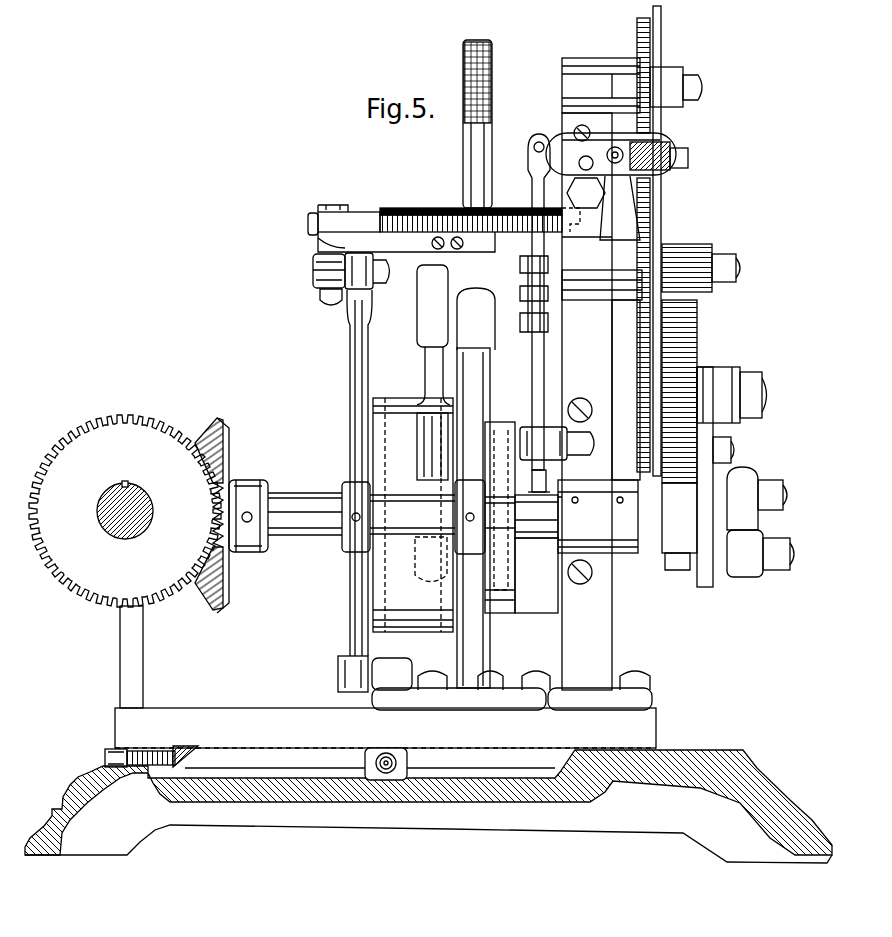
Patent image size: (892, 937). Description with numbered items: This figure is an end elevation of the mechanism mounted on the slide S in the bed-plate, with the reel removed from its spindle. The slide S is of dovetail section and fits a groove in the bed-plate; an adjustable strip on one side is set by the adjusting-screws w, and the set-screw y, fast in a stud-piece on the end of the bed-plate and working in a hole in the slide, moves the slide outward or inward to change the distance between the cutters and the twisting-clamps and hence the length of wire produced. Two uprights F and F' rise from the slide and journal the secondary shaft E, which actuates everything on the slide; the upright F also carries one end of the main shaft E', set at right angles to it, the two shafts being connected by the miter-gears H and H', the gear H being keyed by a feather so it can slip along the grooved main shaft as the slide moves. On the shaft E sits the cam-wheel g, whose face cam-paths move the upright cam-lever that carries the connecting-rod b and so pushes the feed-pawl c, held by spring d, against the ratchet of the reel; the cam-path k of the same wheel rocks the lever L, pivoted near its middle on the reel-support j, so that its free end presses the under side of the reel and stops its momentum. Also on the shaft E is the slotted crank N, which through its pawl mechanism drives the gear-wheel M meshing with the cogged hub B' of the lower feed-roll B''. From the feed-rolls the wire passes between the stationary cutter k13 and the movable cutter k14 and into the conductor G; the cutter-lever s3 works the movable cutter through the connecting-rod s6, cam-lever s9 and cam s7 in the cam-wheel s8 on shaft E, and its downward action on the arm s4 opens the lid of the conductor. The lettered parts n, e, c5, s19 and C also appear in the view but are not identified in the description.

The slide S is at (428, 785).
The set-screw y is at (398, 764).
The adjusting-screws w is at (108, 752).
The spring s19 is at (190, 756).
The upright F is at (131, 657).
The upright F' is at (537, 384).
The miter-gear H is at (125, 511).
The miter-gear H' is at (227, 515).
The main shaft E' is at (125, 510).
The secondary shaft E is at (395, 517).
The rod n is at (355, 491).
The connecting-rod b is at (351, 279).
The feed-pawl c is at (480, 220).
The rail end e is at (344, 220).
The plate c5 is at (392, 206).
The spring d is at (406, 243).
The lever L is at (417, 345).
The reel-support j is at (475, 488).
The cam-wheel g is at (413, 515).
The cam-path k is at (424, 559).
The connecting-rod s6 is at (530, 196).
The cam s7 is at (520, 445).
The cam-wheel s8 is at (508, 593).
The cam-lever s9 is at (536, 554).
The cutter-lever s3 is at (611, 186).
The arm s4 is at (586, 163).
The conductor G is at (638, 156).
The stationary cutter k13 is at (682, 128).
The movable cutter k14 is at (690, 155).
The lower feed-roll B'' is at (665, 241).
The cogged hub B' is at (701, 268).
The gear-wheel M is at (690, 382).
The slotted crank N is at (717, 451).
The crank C is at (728, 477).